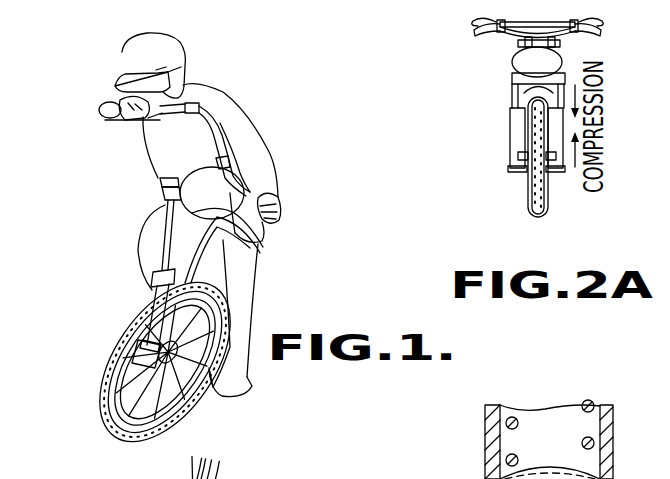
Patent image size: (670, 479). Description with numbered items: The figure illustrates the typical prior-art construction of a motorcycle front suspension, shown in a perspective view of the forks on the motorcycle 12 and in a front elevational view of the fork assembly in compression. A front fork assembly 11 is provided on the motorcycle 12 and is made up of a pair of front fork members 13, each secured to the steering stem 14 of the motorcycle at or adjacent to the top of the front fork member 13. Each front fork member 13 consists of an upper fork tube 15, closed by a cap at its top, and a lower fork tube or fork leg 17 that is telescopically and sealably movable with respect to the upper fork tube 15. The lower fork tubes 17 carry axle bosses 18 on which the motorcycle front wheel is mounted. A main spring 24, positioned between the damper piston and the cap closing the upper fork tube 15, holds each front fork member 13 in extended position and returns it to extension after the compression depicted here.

In FIG. 1, the front fork assembly 11 is at (154, 189).
In FIG. 2A, the front fork assembly 11 is at (505, 87).
In FIG. 1, the motorcycle 12 is at (80, 230).
In FIG. 1, the front fork member 13 is at (121, 318).
In FIG. 2A, the front fork member 13 is at (505, 113).
In FIG. 1, the steering stem 14 is at (180, 215).
In FIG. 1, the upper fork tube 15 is at (168, 238).
In FIG. 2A, the upper fork tube 15 is at (613, 412).
In FIG. 1, the lower fork tube 17 is at (148, 303).
In FIG. 1, the axle boss 18 is at (135, 352).
In FIG. 2A, the main spring 24 is at (592, 446).